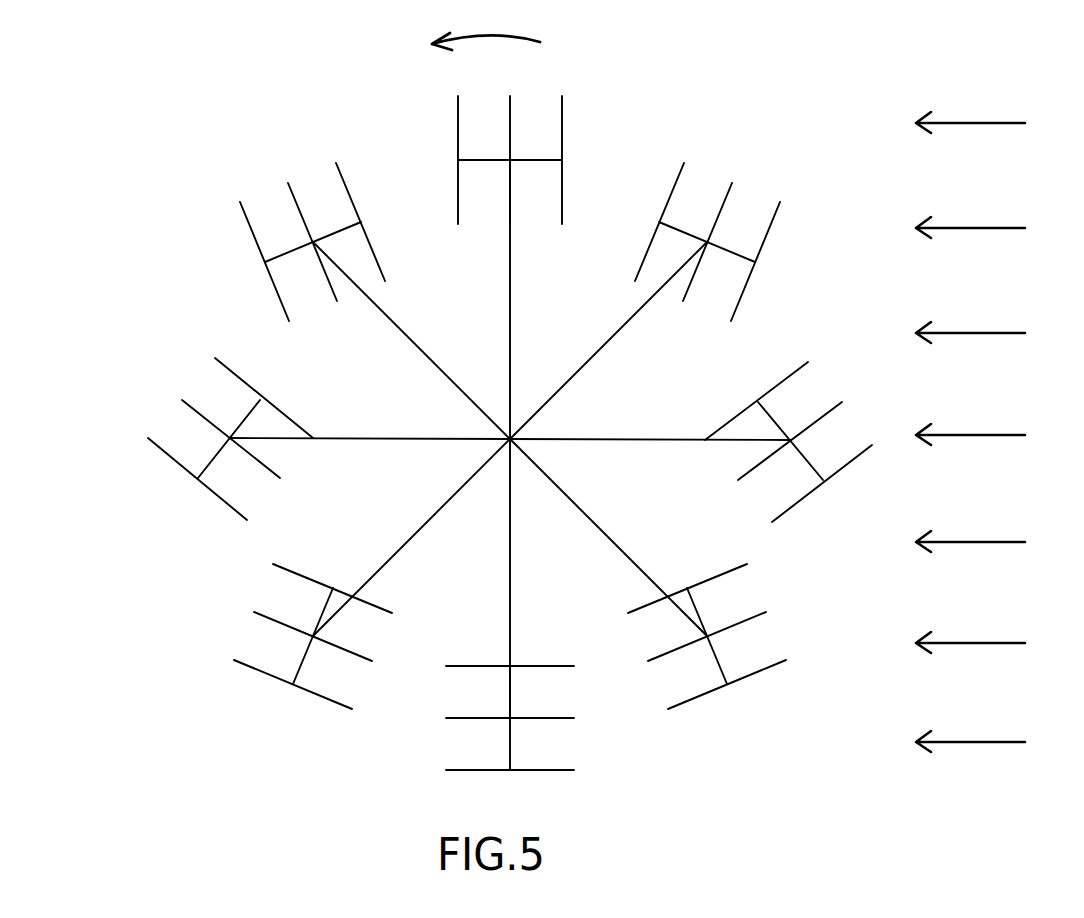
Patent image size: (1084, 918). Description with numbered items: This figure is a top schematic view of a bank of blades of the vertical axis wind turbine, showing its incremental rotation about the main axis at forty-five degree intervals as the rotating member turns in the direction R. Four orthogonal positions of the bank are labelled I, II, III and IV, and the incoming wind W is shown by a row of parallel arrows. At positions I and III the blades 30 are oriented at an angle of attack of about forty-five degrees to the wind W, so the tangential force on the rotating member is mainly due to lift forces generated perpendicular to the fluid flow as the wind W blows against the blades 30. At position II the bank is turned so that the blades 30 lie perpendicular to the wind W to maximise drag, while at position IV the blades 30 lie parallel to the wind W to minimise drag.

The blades 30 is at (223, 370).
The position I is at (880, 437).
The position II is at (513, 80).
The position III is at (190, 427).
The position IV is at (534, 784).
The direction of rotation R is at (486, 25).
The wind W is at (998, 432).